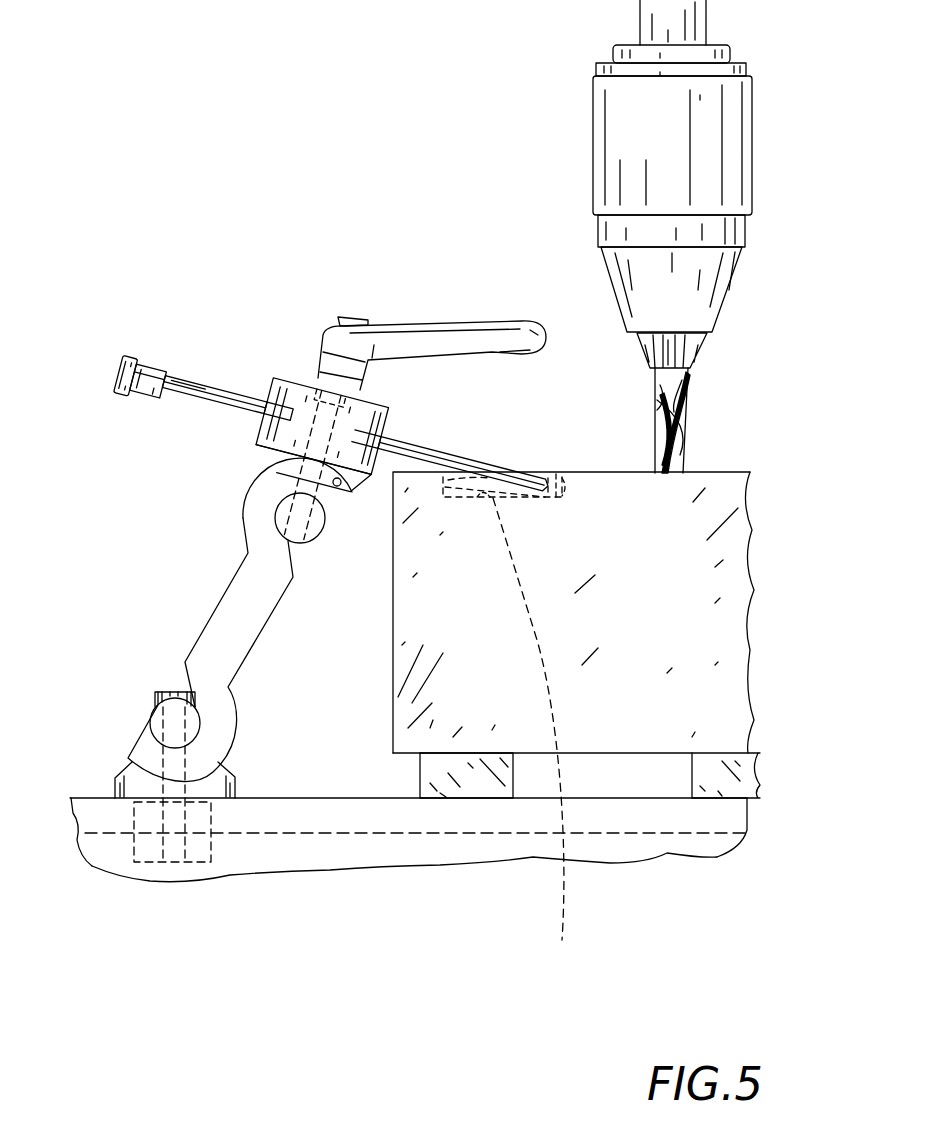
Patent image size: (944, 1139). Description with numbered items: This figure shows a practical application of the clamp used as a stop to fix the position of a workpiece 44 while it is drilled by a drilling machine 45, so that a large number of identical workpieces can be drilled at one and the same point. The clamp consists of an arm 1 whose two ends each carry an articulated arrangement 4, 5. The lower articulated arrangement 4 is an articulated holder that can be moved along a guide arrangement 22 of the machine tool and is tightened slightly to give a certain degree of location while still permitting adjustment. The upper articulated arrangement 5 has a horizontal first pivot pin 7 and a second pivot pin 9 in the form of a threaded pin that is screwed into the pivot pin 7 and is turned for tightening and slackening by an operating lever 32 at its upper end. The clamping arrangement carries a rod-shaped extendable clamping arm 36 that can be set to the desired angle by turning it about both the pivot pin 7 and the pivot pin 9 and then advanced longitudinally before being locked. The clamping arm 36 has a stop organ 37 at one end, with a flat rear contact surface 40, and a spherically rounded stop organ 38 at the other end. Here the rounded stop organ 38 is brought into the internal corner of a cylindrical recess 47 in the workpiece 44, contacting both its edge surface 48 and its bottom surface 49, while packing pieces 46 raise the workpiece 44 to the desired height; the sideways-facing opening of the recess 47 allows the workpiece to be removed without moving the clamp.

The arm 1 is at (232, 620).
The articulated arrangement 4 is at (138, 722).
The articulated arrangement 5 is at (236, 507).
The first pivot pin 7 is at (280, 518).
The second pivot pin 9 is at (316, 418).
The guide arrangement 22 is at (74, 852).
The operating lever 32 is at (425, 338).
The clamping arm 36 is at (183, 392).
The stop organ 37 is at (108, 360).
The stop organ 38 is at (548, 470).
The rear contact surface 40 is at (135, 368).
The workpiece 44 is at (403, 708).
The drilling machine 45 is at (578, 148).
The packing pieces 46 is at (462, 787).
The recess 47 is at (492, 472).
The edge surface 48 is at (563, 470).
The bottom surface 49 is at (535, 738).